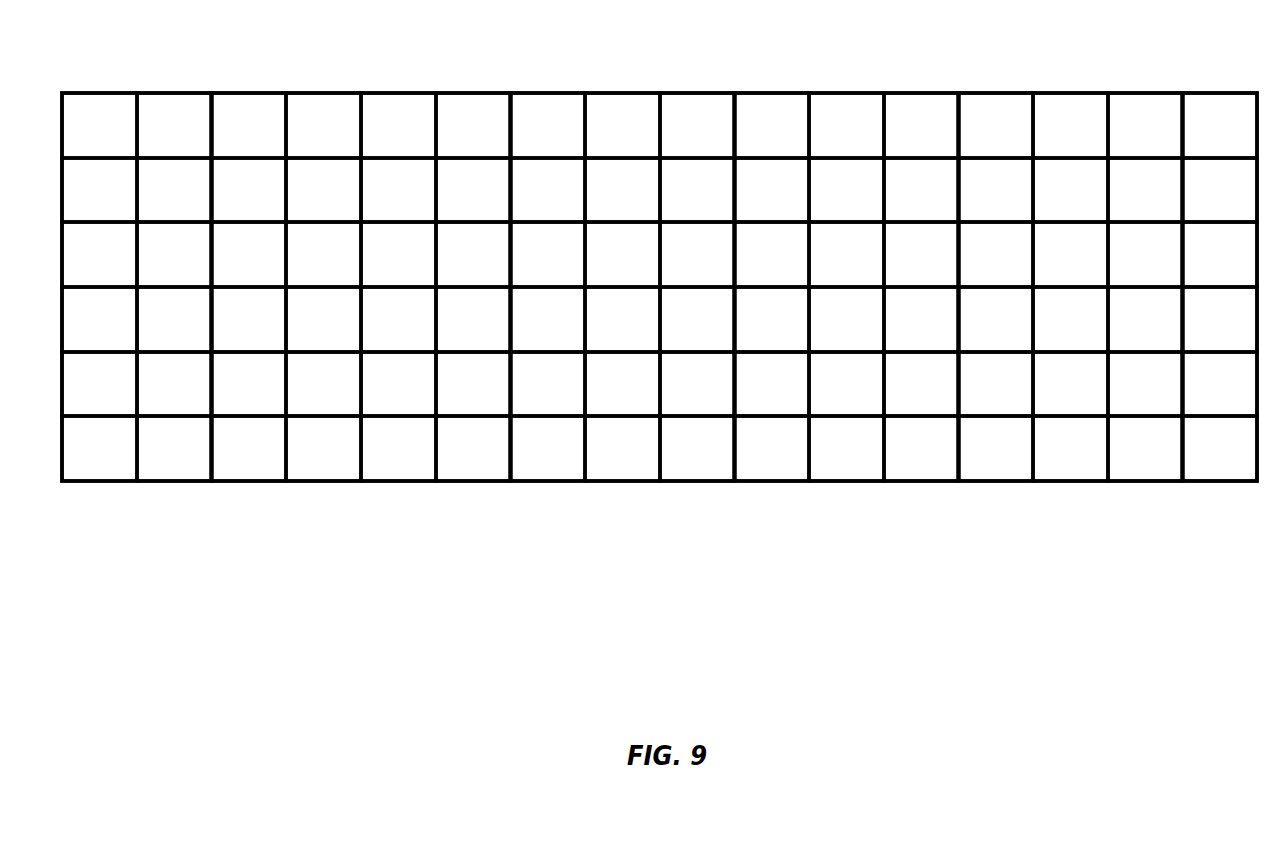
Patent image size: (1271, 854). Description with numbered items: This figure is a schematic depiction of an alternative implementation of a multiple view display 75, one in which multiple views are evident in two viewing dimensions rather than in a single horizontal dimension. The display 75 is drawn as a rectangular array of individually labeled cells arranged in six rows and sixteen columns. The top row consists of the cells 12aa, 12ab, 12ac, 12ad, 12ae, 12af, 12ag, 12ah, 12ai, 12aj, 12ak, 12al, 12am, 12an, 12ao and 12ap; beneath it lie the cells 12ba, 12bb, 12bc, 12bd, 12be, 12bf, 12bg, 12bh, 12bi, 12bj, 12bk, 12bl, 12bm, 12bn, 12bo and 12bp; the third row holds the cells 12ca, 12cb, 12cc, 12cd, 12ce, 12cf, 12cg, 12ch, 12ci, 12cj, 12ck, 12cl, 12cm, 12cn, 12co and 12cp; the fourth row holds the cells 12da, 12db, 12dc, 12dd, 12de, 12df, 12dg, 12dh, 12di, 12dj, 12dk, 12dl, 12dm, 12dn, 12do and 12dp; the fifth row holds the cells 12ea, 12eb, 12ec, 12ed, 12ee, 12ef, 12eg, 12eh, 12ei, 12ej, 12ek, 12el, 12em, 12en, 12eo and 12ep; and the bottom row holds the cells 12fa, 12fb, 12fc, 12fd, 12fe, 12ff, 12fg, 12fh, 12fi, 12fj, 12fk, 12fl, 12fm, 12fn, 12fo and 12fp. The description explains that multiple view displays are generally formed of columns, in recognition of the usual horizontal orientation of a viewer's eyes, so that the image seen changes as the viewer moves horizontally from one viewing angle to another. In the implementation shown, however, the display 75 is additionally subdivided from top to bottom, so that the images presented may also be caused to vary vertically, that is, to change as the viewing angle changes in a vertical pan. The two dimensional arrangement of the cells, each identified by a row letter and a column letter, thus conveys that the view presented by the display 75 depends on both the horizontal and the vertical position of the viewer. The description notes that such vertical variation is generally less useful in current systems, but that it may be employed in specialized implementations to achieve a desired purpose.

The multiple view display 75 is at (768, 42).
The light source 12aa is at (72, 137).
The light source 12ab is at (147, 137).
The light source 12ac is at (222, 137).
The light source 12ad is at (296, 137).
The light source 12ae is at (371, 137).
The light source 12af is at (449, 137).
The light source 12ag is at (521, 137).
The light source 12ah is at (595, 137).
The light source 12ai is at (675, 137).
The light source 12aj is at (750, 137).
The light source 12ak is at (819, 137).
The light source 12al is at (899, 137).
The light source 12am is at (965, 137).
The light source 12an is at (1043, 137).
The light source 12ao is at (1118, 137).
The light source 12ap is at (1193, 137).
The light source 12ba is at (72, 202).
The light source 12bb is at (147, 202).
The light source 12bc is at (222, 202).
The light source 12bd is at (296, 202).
The light source 12be is at (371, 202).
The light source 12bf is at (449, 202).
The light source 12bg is at (521, 202).
The light source 12bh is at (595, 202).
The light source 12bi is at (675, 202).
The light source 12bj is at (750, 202).
The light source 12bk is at (819, 202).
The light source 12bl is at (899, 202).
The light source 12bm is at (965, 202).
The light source 12bn is at (1043, 202).
The light source 12bo is at (1118, 202).
The light source 12bp is at (1193, 202).
The light source 12ca is at (72, 267).
The light source 12cb is at (147, 267).
The light source 12cc is at (222, 267).
The light source 12cd is at (296, 267).
The light source 12ce is at (371, 267).
The light source 12cf is at (449, 267).
The light source 12cg is at (521, 267).
The light source 12ch is at (595, 267).
The light source 12ci is at (675, 267).
The light source 12cj is at (750, 267).
The light source 12ck is at (819, 267).
The light source 12cl is at (899, 267).
The light source 12cm is at (965, 267).
The light source 12cn is at (1043, 267).
The light source 12co is at (1118, 267).
The light source 12cp is at (1193, 267).
The light source 12da is at (72, 331).
The light source 12db is at (147, 331).
The light source 12dc is at (222, 331).
The light source 12dd is at (296, 331).
The light source 12de is at (371, 331).
The light source 12df is at (449, 331).
The light source 12dg is at (521, 331).
The light source 12dh is at (595, 331).
The light source 12di is at (675, 331).
The light source 12dj is at (750, 331).
The light source 12dk is at (819, 331).
The light source 12dl is at (899, 331).
The light source 12dm is at (965, 331).
The light source 12dn is at (1043, 331).
The light source 12do is at (1118, 331).
The light source 12dp is at (1193, 331).
The light source 12ea is at (72, 396).
The light source 12eb is at (147, 396).
The light source 12ec is at (222, 396).
The light source 12ed is at (296, 396).
The light source 12ee is at (371, 396).
The light source 12ef is at (449, 396).
The light source 12eg is at (521, 396).
The light source 12eh is at (595, 396).
The light source 12ei is at (675, 396).
The light source 12ej is at (750, 396).
The light source 12ek is at (819, 396).
The light source 12el is at (899, 396).
The light source 12em is at (965, 396).
The light source 12en is at (1043, 396).
The light source 12eo is at (1118, 396).
The light source 12ep is at (1193, 396).
The light source 12fa is at (75, 461).
The light source 12fb is at (150, 461).
The light source 12fc is at (225, 461).
The light source 12fd is at (299, 461).
The light source 12fe is at (374, 461).
The light source 12ff is at (452, 461).
The light source 12fg is at (524, 461).
The light source 12fh is at (598, 461).
The light source 12fi is at (677, 461).
The light source 12fj is at (752, 461).
The light source 12fk is at (822, 461).
The light source 12fl is at (901, 461).
The light source 12fm is at (967, 461).
The light source 12fn is at (1046, 461).
The light source 12fo is at (1121, 461).
The light source 12fp is at (1196, 461).